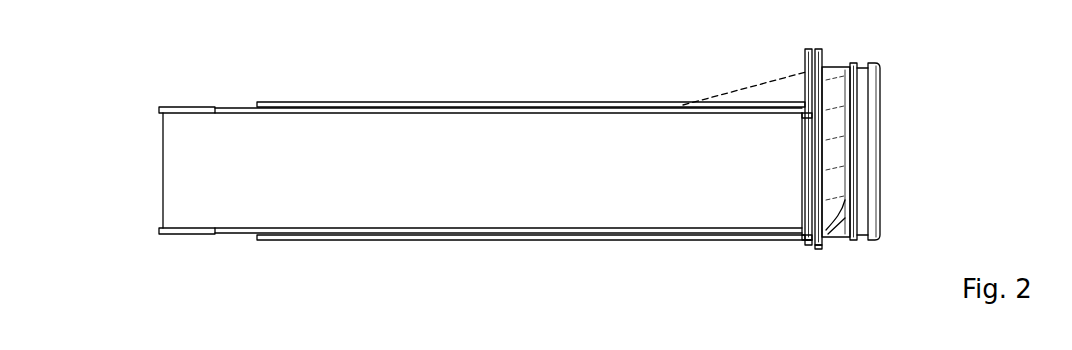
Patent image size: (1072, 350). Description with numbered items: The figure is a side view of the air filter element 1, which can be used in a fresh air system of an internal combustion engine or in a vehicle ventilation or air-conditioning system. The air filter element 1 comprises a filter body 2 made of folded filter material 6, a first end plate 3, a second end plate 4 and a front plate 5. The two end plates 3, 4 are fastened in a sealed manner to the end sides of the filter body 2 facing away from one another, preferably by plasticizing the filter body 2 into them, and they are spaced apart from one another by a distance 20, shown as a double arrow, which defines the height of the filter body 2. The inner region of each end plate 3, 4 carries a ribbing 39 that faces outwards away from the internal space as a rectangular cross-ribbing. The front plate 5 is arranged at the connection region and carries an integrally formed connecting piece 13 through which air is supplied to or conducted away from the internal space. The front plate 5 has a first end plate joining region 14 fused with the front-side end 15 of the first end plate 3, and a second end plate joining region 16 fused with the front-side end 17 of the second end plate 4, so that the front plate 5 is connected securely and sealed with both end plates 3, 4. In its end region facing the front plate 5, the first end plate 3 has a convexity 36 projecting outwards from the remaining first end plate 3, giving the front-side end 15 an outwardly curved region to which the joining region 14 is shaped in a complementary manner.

The air filter element 1 is at (153, 90).
The filter body 2 is at (161, 173).
The first end plate 3 is at (350, 100).
The second end plate 4 is at (240, 235).
The front plate 5 is at (840, 66).
The filter material 6 is at (568, 132).
The connecting piece 13 is at (872, 163).
The first end plate joining region 14 is at (822, 78).
The front-side end of the first end plate 15 is at (807, 75).
The second end plate joining region 16 is at (822, 248).
The front-side end of the second end plate 17 is at (808, 247).
The distance 20 is at (275, 116).
The convexity 36 is at (760, 90).
The ribbing 39 is at (502, 102).